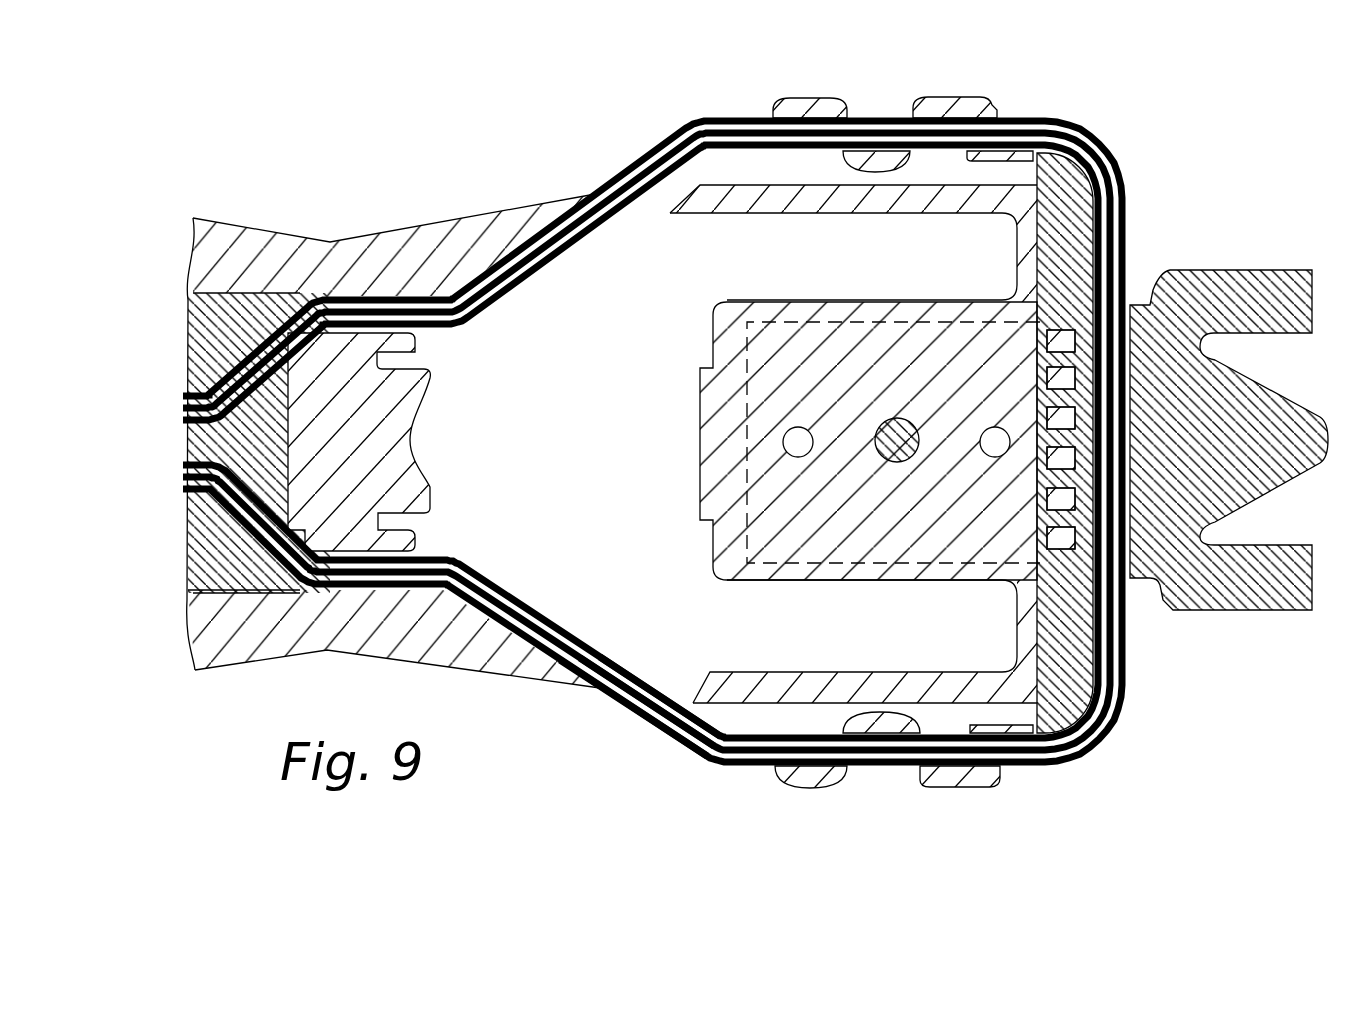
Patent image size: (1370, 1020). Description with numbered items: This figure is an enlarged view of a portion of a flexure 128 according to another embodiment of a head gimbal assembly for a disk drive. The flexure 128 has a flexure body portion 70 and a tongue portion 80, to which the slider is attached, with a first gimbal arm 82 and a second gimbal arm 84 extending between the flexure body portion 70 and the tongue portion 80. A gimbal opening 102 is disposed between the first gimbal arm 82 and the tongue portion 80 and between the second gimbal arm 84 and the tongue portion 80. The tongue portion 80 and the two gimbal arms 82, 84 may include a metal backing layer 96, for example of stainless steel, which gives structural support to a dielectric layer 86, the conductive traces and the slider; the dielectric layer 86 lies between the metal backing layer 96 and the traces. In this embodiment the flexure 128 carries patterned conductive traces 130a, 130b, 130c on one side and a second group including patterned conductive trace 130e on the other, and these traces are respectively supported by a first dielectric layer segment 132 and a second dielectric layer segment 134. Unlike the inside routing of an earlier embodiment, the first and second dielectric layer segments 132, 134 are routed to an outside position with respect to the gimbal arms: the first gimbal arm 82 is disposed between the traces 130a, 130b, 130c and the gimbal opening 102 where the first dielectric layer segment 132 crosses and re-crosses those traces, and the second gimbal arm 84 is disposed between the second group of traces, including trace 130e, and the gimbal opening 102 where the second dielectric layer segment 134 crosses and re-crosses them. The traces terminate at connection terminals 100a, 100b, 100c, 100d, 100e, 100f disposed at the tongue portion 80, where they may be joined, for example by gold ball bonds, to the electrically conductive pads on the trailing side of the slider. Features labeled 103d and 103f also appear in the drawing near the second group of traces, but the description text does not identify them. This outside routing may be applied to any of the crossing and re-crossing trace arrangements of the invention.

The flexure 128 is at (358, 142).
The dielectric layer 86 is at (218, 313).
The flexure body portion 70 is at (293, 238).
The patterned conductive trace 130a is at (607, 187).
The patterned conductive trace 130b is at (630, 207).
The patterned conductive trace 130c is at (657, 177).
The first dielectric layer segment 132 is at (814, 94).
The second dielectric layer segment 134 is at (817, 785).
The first gimbal arm 82 is at (940, 212).
The second gimbal arm 84 is at (930, 670).
The tongue portion 80 is at (702, 416).
The metal backing layer 96 is at (702, 446).
The gimbal opening 102 is at (670, 287).
The connection terminal 100a is at (1085, 345).
The connection terminal 100b is at (1075, 395).
The connection terminal 100c is at (1065, 415).
The connection terminal 100d is at (1137, 488).
The connection terminal 100e is at (1200, 555).
The connection terminal 100f is at (1130, 607).
The flexible layer end portion 103d is at (680, 737).
The flexible layer end portion 103f is at (607, 698).
The patterned conductive trace 130e is at (647, 722).